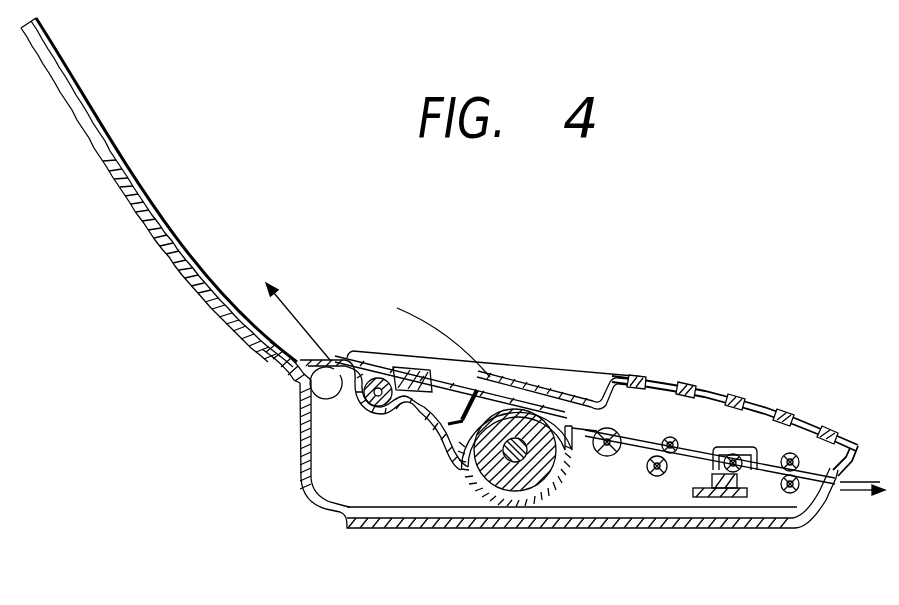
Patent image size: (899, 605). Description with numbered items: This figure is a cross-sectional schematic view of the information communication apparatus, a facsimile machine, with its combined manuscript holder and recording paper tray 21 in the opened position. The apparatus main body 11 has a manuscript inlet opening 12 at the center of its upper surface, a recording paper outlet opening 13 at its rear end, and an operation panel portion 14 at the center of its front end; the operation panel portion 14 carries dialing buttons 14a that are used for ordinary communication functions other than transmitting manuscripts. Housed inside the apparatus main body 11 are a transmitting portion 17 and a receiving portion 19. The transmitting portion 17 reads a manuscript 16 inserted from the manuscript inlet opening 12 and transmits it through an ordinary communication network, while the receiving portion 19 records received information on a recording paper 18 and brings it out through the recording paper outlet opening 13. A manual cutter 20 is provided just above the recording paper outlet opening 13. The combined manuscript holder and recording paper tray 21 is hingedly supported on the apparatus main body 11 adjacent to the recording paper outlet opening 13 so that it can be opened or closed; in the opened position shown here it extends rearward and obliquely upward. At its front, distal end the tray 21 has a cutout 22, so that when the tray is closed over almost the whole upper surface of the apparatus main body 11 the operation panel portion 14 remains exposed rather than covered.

The apparatus main body 11 is at (303, 473).
The manuscript inlet opening 12 is at (547, 383).
The recording paper outlet opening 13 is at (337, 357).
The operation panel portion 14 is at (813, 427).
The dialing buttons 14a is at (751, 403).
The manuscript 16 is at (438, 330).
The transmitting portion 17 is at (683, 480).
The recording paper 18 is at (300, 352).
The receiving portion 19 is at (400, 410).
The manual cutter 20 is at (345, 355).
The combined manuscript holder and recording paper tray 21 is at (167, 250).
The cutout 22 is at (67, 103).